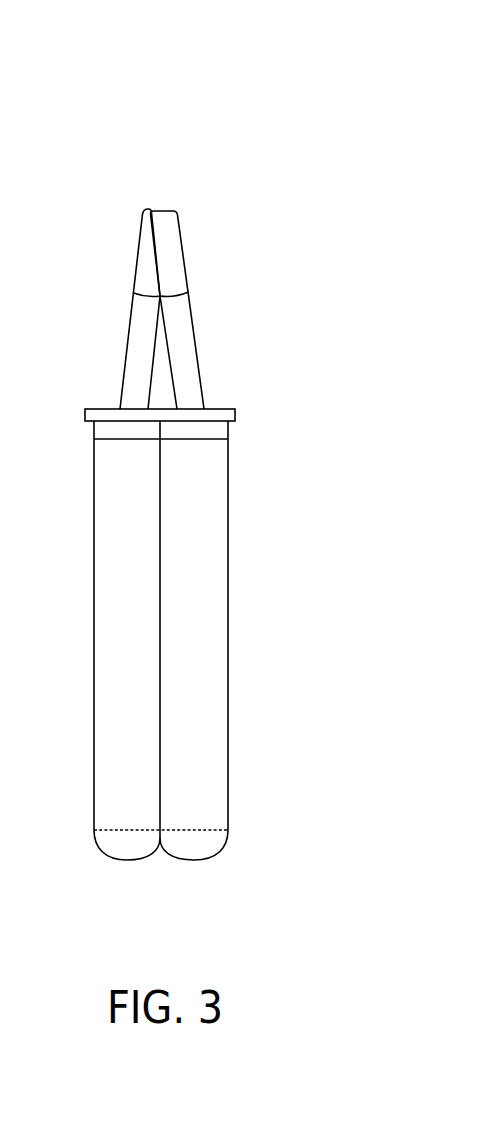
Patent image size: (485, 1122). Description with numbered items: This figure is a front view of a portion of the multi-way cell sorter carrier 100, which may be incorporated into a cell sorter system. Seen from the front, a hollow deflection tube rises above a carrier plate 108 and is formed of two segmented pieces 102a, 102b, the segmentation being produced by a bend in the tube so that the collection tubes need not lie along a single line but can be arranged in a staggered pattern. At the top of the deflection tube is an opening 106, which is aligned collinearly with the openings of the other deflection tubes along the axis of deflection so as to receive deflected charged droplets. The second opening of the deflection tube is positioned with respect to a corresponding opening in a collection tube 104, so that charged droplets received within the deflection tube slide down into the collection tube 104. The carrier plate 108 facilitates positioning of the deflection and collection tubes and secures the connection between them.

The multi-way cell sorter carrier 100 is at (340, 64).
The segmented piece 102a is at (182, 248).
The segmented piece 102b is at (193, 348).
The collection tube 104 is at (229, 690).
The opening 106 is at (164, 203).
The carrier plate 108 is at (235, 411).